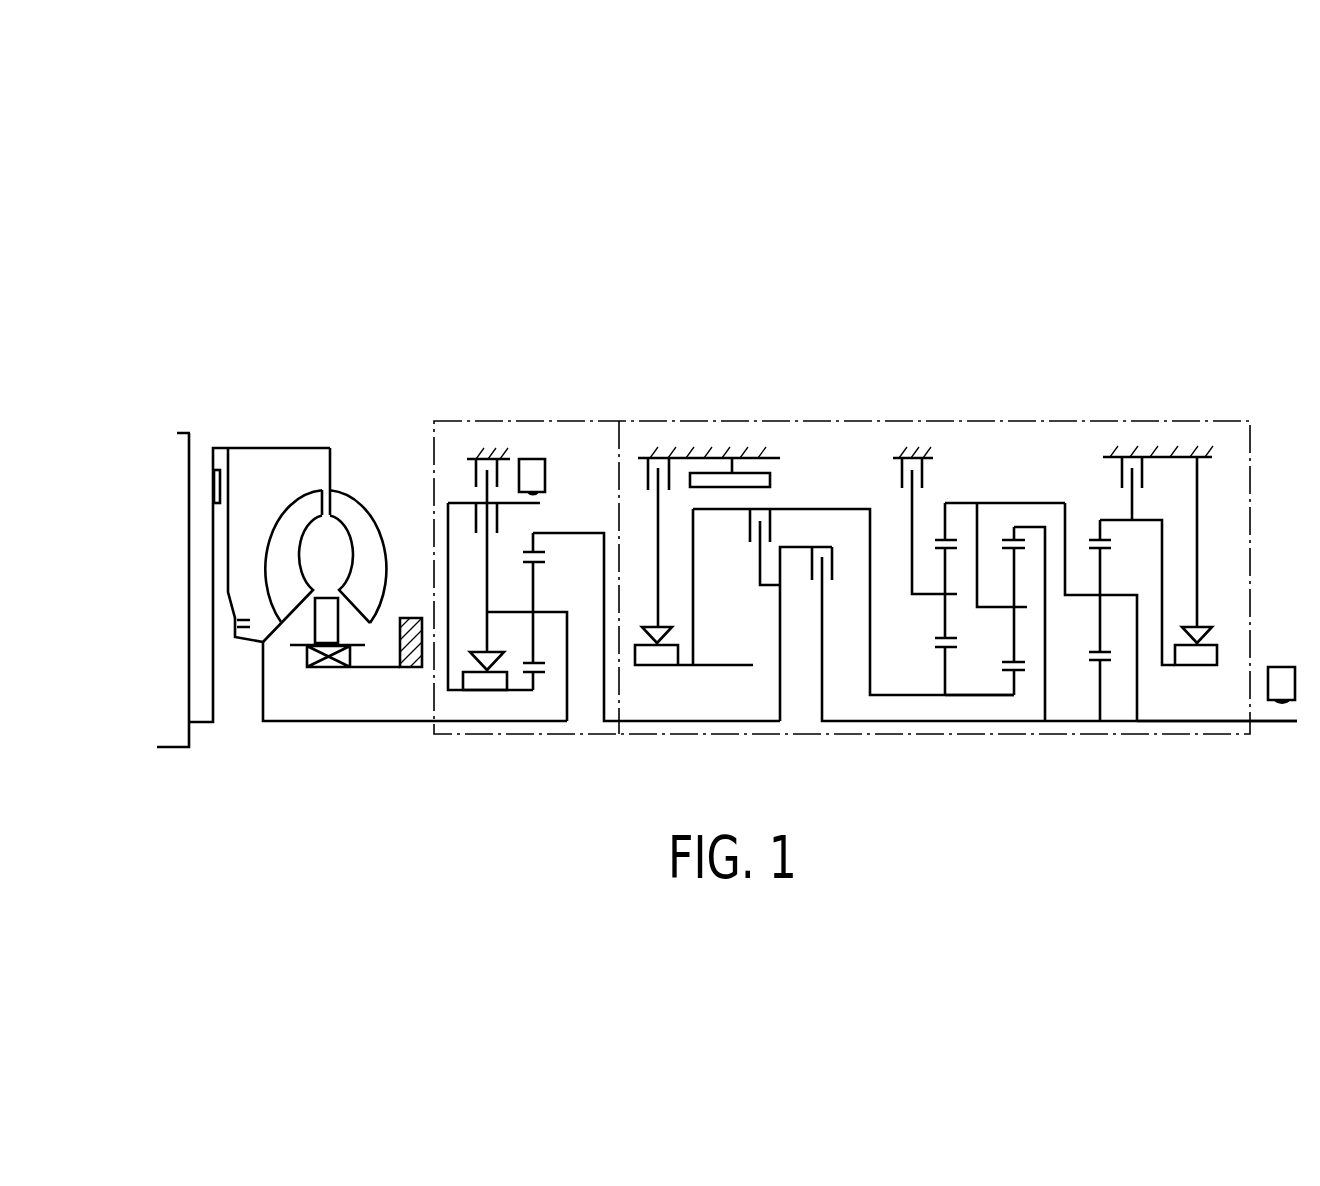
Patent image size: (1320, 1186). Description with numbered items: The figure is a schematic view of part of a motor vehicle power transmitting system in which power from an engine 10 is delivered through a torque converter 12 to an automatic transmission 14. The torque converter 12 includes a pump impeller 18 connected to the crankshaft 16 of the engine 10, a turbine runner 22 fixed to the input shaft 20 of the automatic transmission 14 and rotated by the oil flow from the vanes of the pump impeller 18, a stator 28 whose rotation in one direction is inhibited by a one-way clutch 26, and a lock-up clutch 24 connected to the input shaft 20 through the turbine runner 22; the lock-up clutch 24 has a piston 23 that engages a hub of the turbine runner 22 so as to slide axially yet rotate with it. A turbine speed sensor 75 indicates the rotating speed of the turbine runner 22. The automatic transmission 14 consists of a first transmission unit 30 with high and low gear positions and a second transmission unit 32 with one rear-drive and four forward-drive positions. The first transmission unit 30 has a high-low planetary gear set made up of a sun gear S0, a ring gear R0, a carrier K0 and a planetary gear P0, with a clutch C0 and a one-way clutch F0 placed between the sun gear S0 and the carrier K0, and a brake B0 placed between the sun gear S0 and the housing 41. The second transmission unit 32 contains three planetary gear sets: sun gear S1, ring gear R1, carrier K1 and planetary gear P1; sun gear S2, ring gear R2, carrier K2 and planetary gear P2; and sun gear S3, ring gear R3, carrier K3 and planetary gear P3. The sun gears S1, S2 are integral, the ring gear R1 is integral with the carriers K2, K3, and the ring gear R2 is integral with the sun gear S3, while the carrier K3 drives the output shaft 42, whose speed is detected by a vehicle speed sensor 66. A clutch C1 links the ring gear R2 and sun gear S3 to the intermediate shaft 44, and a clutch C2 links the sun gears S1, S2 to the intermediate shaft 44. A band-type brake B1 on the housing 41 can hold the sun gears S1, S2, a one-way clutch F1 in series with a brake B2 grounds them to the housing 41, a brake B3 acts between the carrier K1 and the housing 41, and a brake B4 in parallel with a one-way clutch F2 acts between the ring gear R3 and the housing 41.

The engine 10 is at (178, 452).
The torque converter 12 is at (303, 522).
The automatic transmission 14 is at (855, 390).
The crankshaft 16 is at (201, 724).
The pump impeller 18 is at (365, 528).
The input shaft 20 is at (315, 724).
The turbine runner 22 is at (300, 510).
The piston 23 is at (222, 555).
The lock-up clutch 24 is at (213, 478).
The one-way clutch 26 is at (329, 669).
The stator 28 is at (322, 620).
The first transmission unit 30 is at (608, 582).
The second transmission unit 32 is at (957, 585).
The housing 41 is at (413, 655).
The output shaft 42 is at (1190, 722).
The intermediate shaft 44 is at (767, 722).
The vehicle speed sensor 66 is at (1282, 677).
The turbine speed sensor 75 is at (535, 475).
The brake B0 is at (472, 475).
The band-type brake B1 is at (765, 478).
The brake B2 is at (647, 475).
The brake B3 is at (898, 478).
The brake B4 is at (1143, 475).
The clutch C0 is at (474, 523).
The clutch C1 is at (833, 565).
The clutch C2 is at (748, 530).
The one-way clutch F0 is at (488, 688).
The one-way clutch F1 is at (660, 668).
The one-way clutch F2 is at (1197, 660).
The carrier K0 is at (553, 612).
The carrier K1 is at (928, 596).
The carrier K2 is at (990, 604).
The carrier K3 is at (1120, 595).
The planetary gear P0 is at (532, 564).
The planetary gear P1 is at (938, 556).
The planetary gear P2 is at (1010, 662).
The planetary gear P3 is at (1093, 650).
The ring gear R0 is at (530, 547).
The ring gear R1 is at (953, 538).
The ring gear R2 is at (1012, 538).
The ring gear R3 is at (1097, 538).
The sun gear S0 is at (538, 674).
The sun gear S1 is at (940, 649).
The sun gear S2 is at (1007, 680).
The sun gear S3 is at (1097, 660).